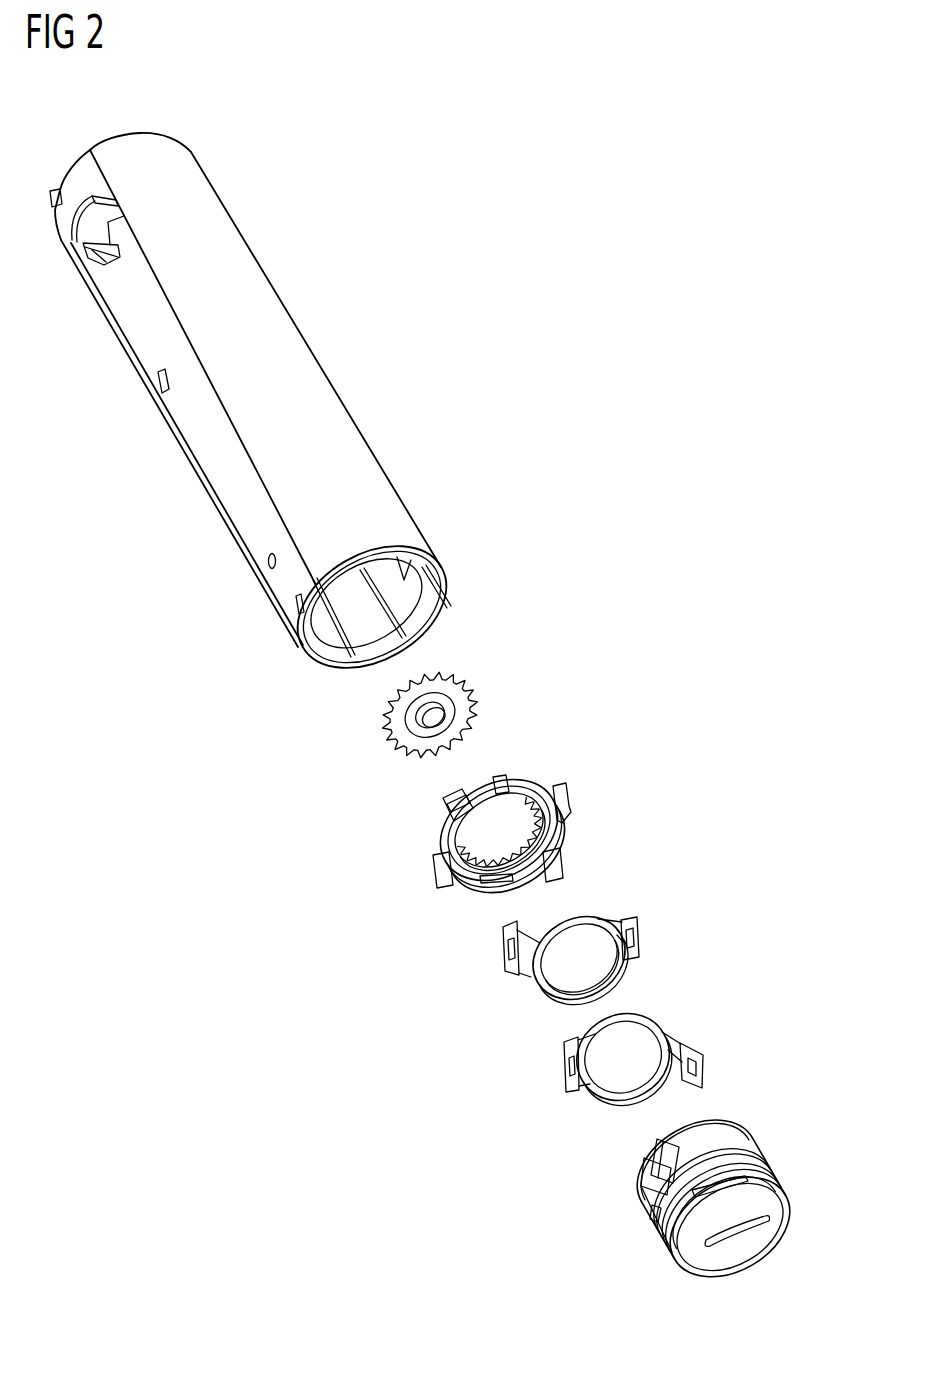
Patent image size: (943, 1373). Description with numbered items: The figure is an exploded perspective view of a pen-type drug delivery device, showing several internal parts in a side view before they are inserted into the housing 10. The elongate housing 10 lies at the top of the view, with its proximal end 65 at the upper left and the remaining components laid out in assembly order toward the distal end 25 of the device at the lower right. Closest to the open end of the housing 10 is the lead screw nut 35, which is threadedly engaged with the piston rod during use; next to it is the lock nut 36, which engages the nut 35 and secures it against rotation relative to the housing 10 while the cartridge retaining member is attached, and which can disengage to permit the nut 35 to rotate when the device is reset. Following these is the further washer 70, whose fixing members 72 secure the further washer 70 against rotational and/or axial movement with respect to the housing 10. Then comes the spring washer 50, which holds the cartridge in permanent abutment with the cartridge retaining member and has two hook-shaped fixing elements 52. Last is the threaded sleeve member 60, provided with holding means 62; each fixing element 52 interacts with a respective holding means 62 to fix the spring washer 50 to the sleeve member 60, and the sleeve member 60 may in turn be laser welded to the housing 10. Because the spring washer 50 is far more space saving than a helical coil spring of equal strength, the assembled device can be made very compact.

The housing 10 is at (305, 372).
The proximal end 65 is at (86, 120).
The nut 35 is at (481, 698).
The lock nut 36 is at (572, 821).
The further washer 70 is at (546, 951).
The fixing members 72 is at (500, 953).
The spring washer 50 is at (601, 1050).
The fixing elements 52 is at (558, 1067).
The sleeve member 60 is at (691, 1198).
The holding means 62 is at (640, 1180).
The distal end 25 is at (703, 1218).